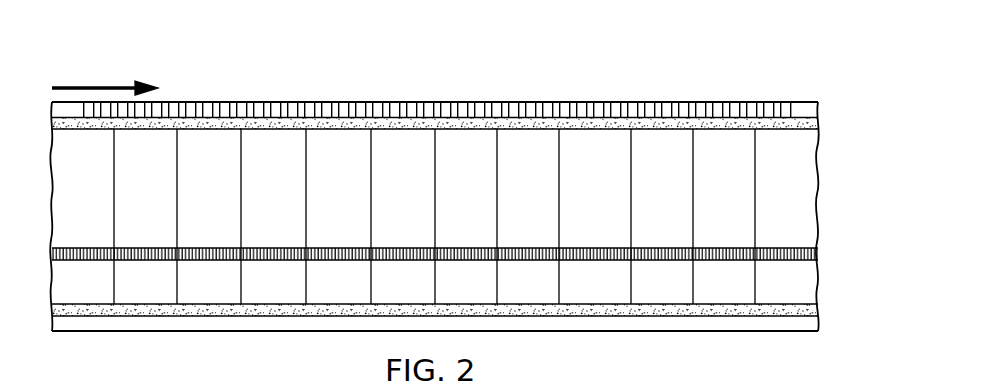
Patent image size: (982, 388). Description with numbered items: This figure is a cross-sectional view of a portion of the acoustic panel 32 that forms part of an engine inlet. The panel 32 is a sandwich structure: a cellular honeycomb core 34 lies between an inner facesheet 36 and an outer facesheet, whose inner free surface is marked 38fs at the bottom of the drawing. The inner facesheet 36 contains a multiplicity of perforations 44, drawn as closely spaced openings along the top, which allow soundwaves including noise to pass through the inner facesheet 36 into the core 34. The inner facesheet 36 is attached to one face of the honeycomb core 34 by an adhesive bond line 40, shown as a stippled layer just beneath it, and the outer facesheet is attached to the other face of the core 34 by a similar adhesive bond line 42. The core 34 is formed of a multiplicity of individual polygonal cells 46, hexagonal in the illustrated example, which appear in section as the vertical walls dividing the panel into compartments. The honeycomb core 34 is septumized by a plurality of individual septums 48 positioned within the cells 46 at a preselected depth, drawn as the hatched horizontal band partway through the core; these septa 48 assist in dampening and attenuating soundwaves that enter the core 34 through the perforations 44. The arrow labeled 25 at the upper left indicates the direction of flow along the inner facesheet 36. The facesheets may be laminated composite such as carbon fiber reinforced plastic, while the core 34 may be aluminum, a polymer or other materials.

The flow direction arrow 25 is at (100, 86).
The acoustic panel 32 is at (514, 50).
The honeycomb core 34 is at (836, 222).
The inner facesheet 36 is at (385, 106).
The inner free surface 38fs is at (626, 322).
The adhesive bond line 40 is at (462, 93).
The adhesive bond line 42 is at (818, 308).
The perforations 44 is at (185, 106).
The polygonal cells 46 is at (818, 190).
The septums 48 is at (212, 248).